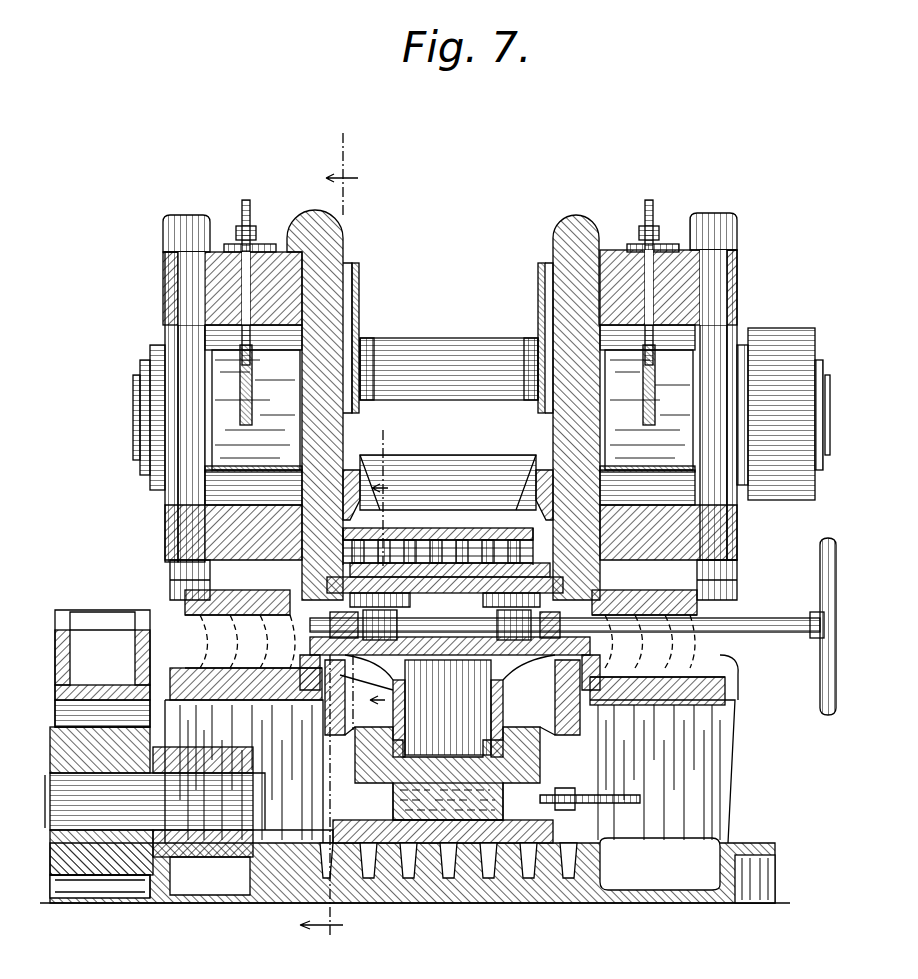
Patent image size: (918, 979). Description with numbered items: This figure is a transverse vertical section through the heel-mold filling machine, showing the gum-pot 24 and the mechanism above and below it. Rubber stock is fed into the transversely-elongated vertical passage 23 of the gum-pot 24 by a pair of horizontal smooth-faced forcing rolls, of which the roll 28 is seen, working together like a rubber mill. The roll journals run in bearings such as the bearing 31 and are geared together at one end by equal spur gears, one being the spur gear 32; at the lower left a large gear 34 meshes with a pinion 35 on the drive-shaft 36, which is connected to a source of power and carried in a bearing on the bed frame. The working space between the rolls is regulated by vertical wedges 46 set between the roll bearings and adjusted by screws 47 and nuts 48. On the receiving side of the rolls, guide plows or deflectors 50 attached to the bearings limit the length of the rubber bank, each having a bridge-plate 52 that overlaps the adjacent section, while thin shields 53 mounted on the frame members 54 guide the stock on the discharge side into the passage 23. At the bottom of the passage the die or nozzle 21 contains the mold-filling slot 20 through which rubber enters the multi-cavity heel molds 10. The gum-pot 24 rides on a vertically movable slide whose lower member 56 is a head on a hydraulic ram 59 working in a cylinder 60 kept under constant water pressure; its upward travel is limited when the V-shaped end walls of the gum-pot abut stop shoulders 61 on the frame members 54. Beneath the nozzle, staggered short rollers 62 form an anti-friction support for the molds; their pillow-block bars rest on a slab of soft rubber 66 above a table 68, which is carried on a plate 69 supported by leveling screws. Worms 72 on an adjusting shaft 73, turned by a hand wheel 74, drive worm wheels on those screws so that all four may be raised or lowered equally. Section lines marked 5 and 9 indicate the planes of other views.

The section line 5- 5 is at (330, 530).
The section line 9- 9 is at (377, 580).
The multi-cavity heel mold 10 is at (507, 535).
The mold-filling slot 20 is at (482, 530).
The die or nozzle 21 is at (452, 515).
The vertical cavity or passage 23 is at (418, 478).
The gum-pot 24 is at (210, 528).
The forcing roll 28 is at (440, 338).
The roll bearing 31 is at (300, 480).
The spur gear 32 is at (785, 325).
The large gear 34 is at (82, 612).
The pinion 35 is at (78, 880).
The drive-shaft 36 is at (105, 835).
The vertical wedge 46 is at (222, 395).
The screw 47 is at (243, 220).
The nut 48 is at (258, 240).
The guide plow or deflector 50 is at (350, 270).
The bridge-plate 52 is at (362, 280).
The thin shield 53 is at (372, 375).
The frame member 54 is at (305, 212).
The lower slide member 56 is at (512, 668).
The hydraulic ram or plunger 59 is at (500, 722).
The cylinder 60 is at (512, 790).
The stop shoulder 61 is at (348, 478).
The short roller 62 is at (392, 530).
The soft rubber slab 66 is at (445, 597).
The table 68 is at (300, 563).
The plate 69 is at (450, 590).
The worm 72 is at (385, 668).
The adjusting shaft 73 is at (758, 628).
The hand wheel 74 is at (826, 568).